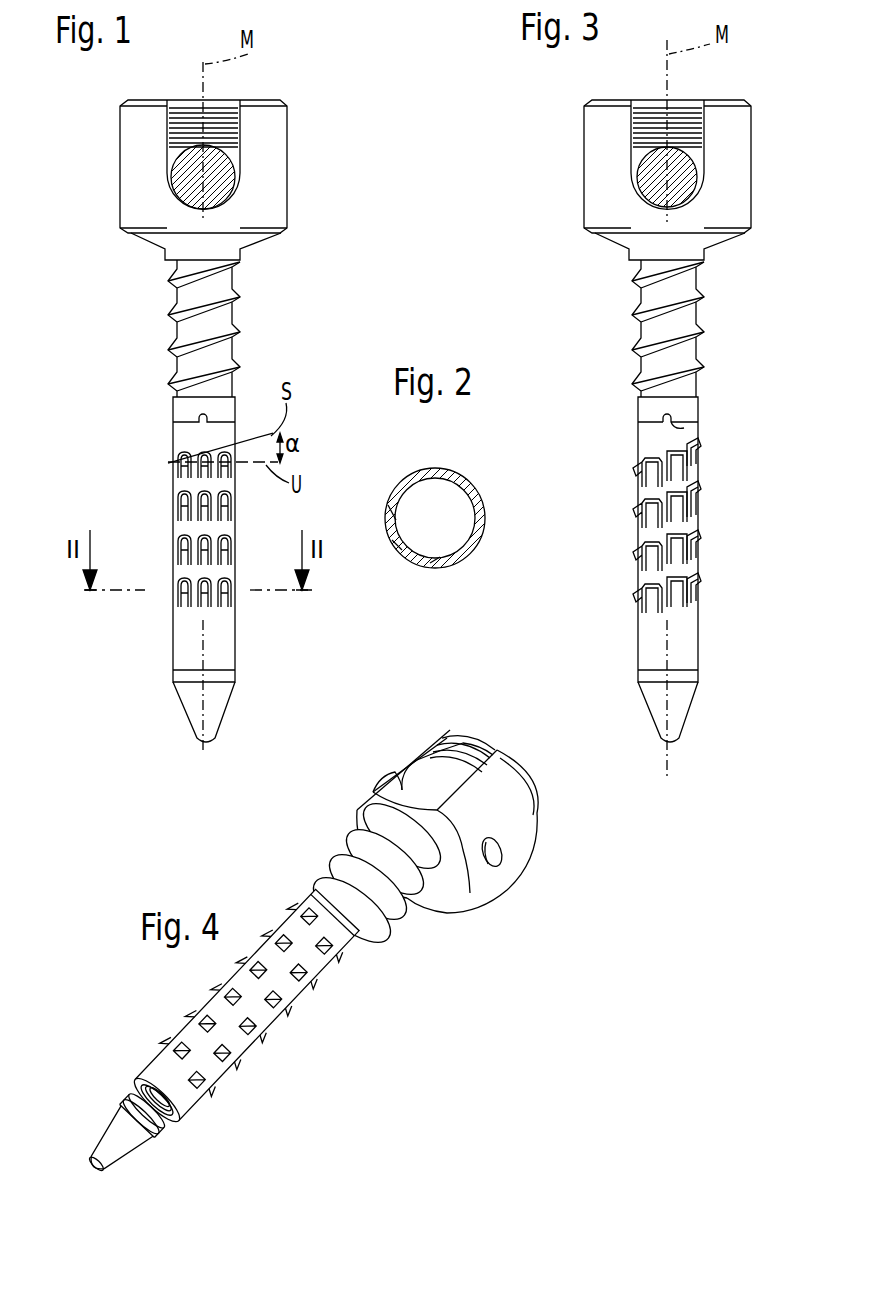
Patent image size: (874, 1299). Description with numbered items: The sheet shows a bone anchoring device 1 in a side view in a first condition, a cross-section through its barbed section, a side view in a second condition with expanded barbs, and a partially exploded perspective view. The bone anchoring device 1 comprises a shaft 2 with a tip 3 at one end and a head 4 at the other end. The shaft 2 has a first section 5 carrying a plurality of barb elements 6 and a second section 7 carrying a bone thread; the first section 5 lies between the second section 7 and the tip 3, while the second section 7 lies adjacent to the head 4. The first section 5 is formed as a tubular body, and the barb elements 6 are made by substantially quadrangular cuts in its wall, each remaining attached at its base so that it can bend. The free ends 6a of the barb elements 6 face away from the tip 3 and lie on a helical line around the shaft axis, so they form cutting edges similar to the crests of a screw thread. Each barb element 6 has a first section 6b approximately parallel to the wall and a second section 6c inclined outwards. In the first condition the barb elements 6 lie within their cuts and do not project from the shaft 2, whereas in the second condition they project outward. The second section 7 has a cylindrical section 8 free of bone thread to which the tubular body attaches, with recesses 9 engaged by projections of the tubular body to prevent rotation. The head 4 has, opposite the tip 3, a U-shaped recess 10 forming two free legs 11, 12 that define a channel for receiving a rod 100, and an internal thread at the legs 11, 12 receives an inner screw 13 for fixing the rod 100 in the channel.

In FIG. 1, the bone anchoring device 1 is at (315, 245).
In FIG. 3, the bone anchoring device 1 is at (575, 410).
In FIG. 4, the bone anchoring device 1 is at (408, 1002).
In FIG. 1, the shaft 2 is at (166, 410).
In FIG. 3, the shaft 2 is at (628, 532).
In FIG. 4, the shaft 2 is at (306, 899).
In FIG. 1, the tip 3 is at (195, 703).
In FIG. 3, the tip 3 is at (694, 712).
In FIG. 4, the tip 3 is at (130, 1158).
In FIG. 1, the head 4 is at (122, 240).
In FIG. 3, the head 4 is at (689, 187).
In FIG. 4, the head 4 is at (522, 860).
In FIG. 1, the first section 5 is at (175, 622).
In FIG. 2, the first section 5 is at (438, 468).
In FIG. 4, the first section 5 is at (152, 1068).
In FIG. 1, the barb elements 6 is at (183, 515).
In FIG. 2, the barb elements 6 is at (384, 517).
In FIG. 3, the barb elements 6 is at (693, 532).
In FIG. 4, the barb elements 6 is at (248, 1030).
In FIG. 1, the free ends 6a is at (205, 447).
In FIG. 3, the free ends 6a is at (731, 461).
In FIG. 4, the free ends 6a is at (313, 993).
In FIG. 3, the first section of barb element 6b is at (728, 519).
In FIG. 3, the second section of barb element 6c is at (731, 494).
In FIG. 1, the second section 7 is at (178, 334).
In FIG. 3, the second section 7 is at (637, 328).
In FIG. 4, the second section 7 is at (385, 920).
In FIG. 3, the cylindrical section 8 is at (692, 400).
In FIG. 3, the recesses 9 is at (705, 430).
In FIG. 1, the recess 10 is at (168, 160).
In FIG. 4, the recess 10 is at (435, 742).
In FIG. 1, the free leg 11 is at (131, 128).
In FIG. 3, the free leg 11 is at (579, 167).
In FIG. 1, the free leg 12 is at (275, 132).
In FIG. 3, the free leg 12 is at (759, 167).
In FIG. 1, the inner screw 13 is at (222, 100).
In FIG. 3, the inner screw 13 is at (687, 103).
In FIG. 4, the inner screw 13 is at (470, 742).
In FIG. 1, the rod 100 is at (187, 195).
In FIG. 3, the rod 100 is at (728, 177).